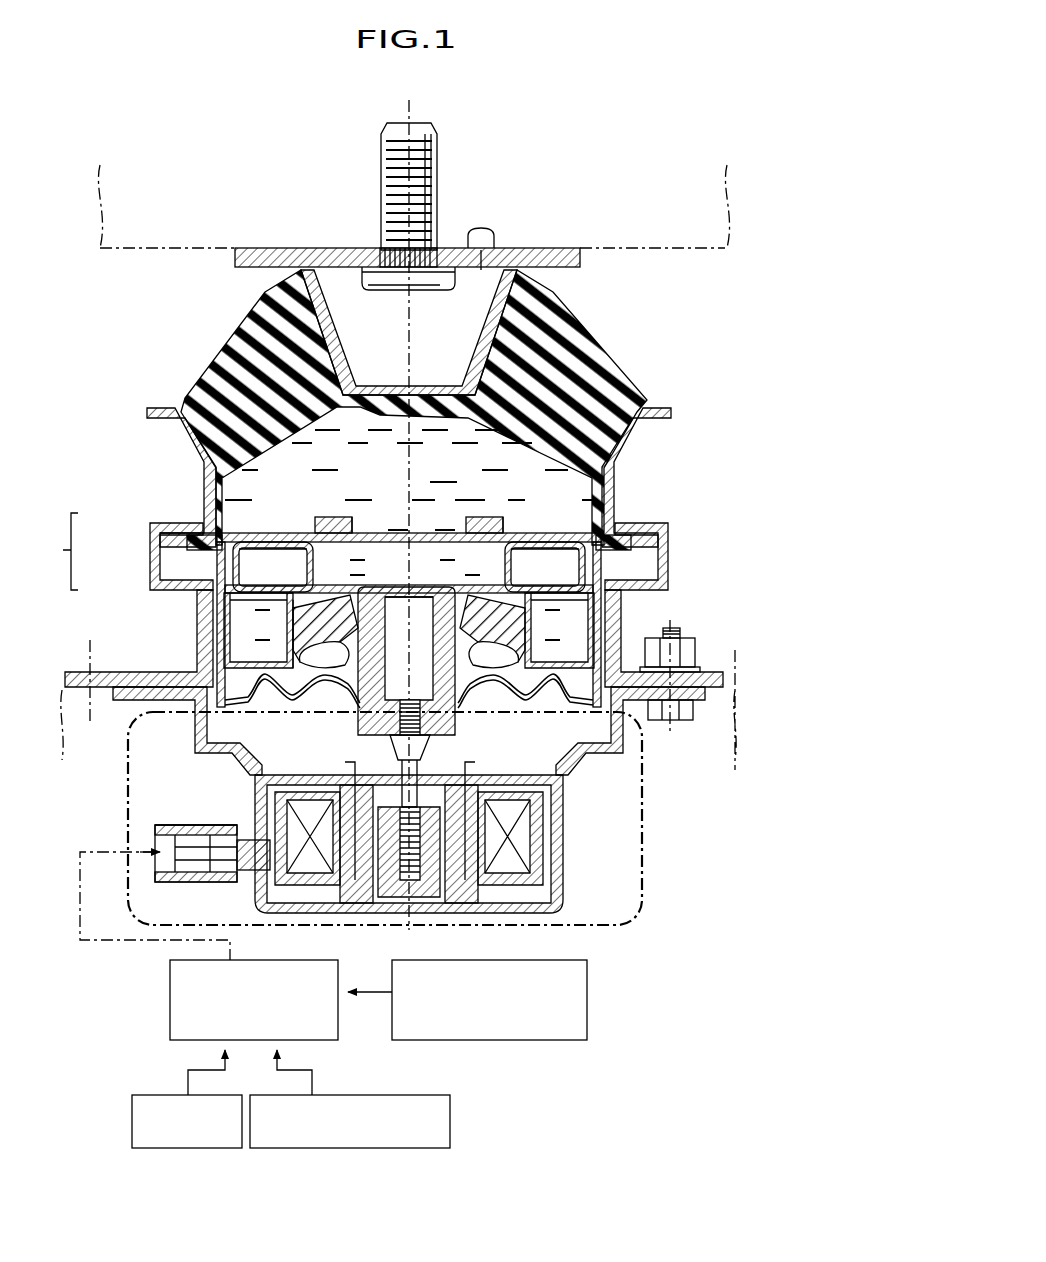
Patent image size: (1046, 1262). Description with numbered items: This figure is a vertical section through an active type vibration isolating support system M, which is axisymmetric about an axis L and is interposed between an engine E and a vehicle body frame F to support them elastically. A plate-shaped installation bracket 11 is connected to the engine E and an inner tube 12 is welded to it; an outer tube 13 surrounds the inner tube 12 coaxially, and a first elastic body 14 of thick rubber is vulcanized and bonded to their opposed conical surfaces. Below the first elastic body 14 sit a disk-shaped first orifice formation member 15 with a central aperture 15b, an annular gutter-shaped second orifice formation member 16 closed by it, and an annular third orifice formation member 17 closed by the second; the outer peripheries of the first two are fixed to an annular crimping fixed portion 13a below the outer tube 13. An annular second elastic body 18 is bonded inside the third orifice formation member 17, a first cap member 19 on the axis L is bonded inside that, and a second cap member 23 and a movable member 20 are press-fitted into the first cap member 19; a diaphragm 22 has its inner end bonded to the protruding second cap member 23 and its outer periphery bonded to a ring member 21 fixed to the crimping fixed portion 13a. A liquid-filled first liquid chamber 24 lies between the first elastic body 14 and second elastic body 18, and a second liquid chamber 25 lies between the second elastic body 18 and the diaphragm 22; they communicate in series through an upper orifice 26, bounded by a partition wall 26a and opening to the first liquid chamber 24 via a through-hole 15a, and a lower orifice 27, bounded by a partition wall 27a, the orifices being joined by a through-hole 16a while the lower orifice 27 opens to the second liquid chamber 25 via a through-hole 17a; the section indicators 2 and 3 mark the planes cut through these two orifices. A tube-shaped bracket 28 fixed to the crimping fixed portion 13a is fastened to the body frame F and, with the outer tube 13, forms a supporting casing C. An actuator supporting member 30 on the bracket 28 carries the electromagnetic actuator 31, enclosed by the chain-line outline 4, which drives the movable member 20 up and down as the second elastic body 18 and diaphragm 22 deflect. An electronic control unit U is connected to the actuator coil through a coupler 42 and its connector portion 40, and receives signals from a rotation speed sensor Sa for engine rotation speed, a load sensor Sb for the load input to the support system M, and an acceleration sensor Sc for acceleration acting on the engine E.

The axis L is at (412, 99).
The installation bracket 11 is at (562, 262).
The engine E is at (650, 260).
The first elastic body 14 is at (238, 362).
The inner tube 12 is at (328, 336).
The active type vibration isolating support system M is at (664, 466).
The first orifice formation member 15 is at (329, 513).
The through-hole 15a is at (548, 538).
The aperture 15b is at (353, 528).
The first liquid chamber 24 is at (411, 535).
The upper orifice 26 is at (254, 550).
The partition wall 26a is at (522, 536).
The second orifice formation member 16 is at (256, 582).
The through-hole 16a is at (545, 567).
The third orifice formation member 17 is at (253, 654).
The through-hole 17a is at (559, 630).
The outer tube 13 is at (190, 443).
The crimping fixed portion 13a is at (150, 524).
The tube-shaped bracket 28 is at (107, 673).
The ring member 21 is at (168, 545).
The section line 2 is at (715, 560).
The section line 3 is at (708, 613).
The supporting casing C is at (59, 551).
The lower orifice 27 is at (251, 611).
The partition wall 27a is at (580, 633).
The second elastic body 18 is at (306, 625).
The first cap member 19 is at (425, 585).
The second cap member 23 is at (352, 648).
The second liquid chamber 25 is at (466, 656).
The movable member 20 is at (444, 722).
The diaphragm 22 is at (302, 700).
The actuator supporting member 30 is at (196, 717).
The electromagnetic actuator 31 is at (572, 816).
The actuator 4 is at (652, 873).
The connector 40 is at (190, 855).
The coupler 42 is at (176, 826).
The vehicle body frame F is at (691, 677).
The electronic control unit U is at (170, 975).
The rotation speed sensor Sa is at (560, 1040).
The load sensor Sb is at (147, 1095).
The acceleration sensor Sc is at (330, 1095).